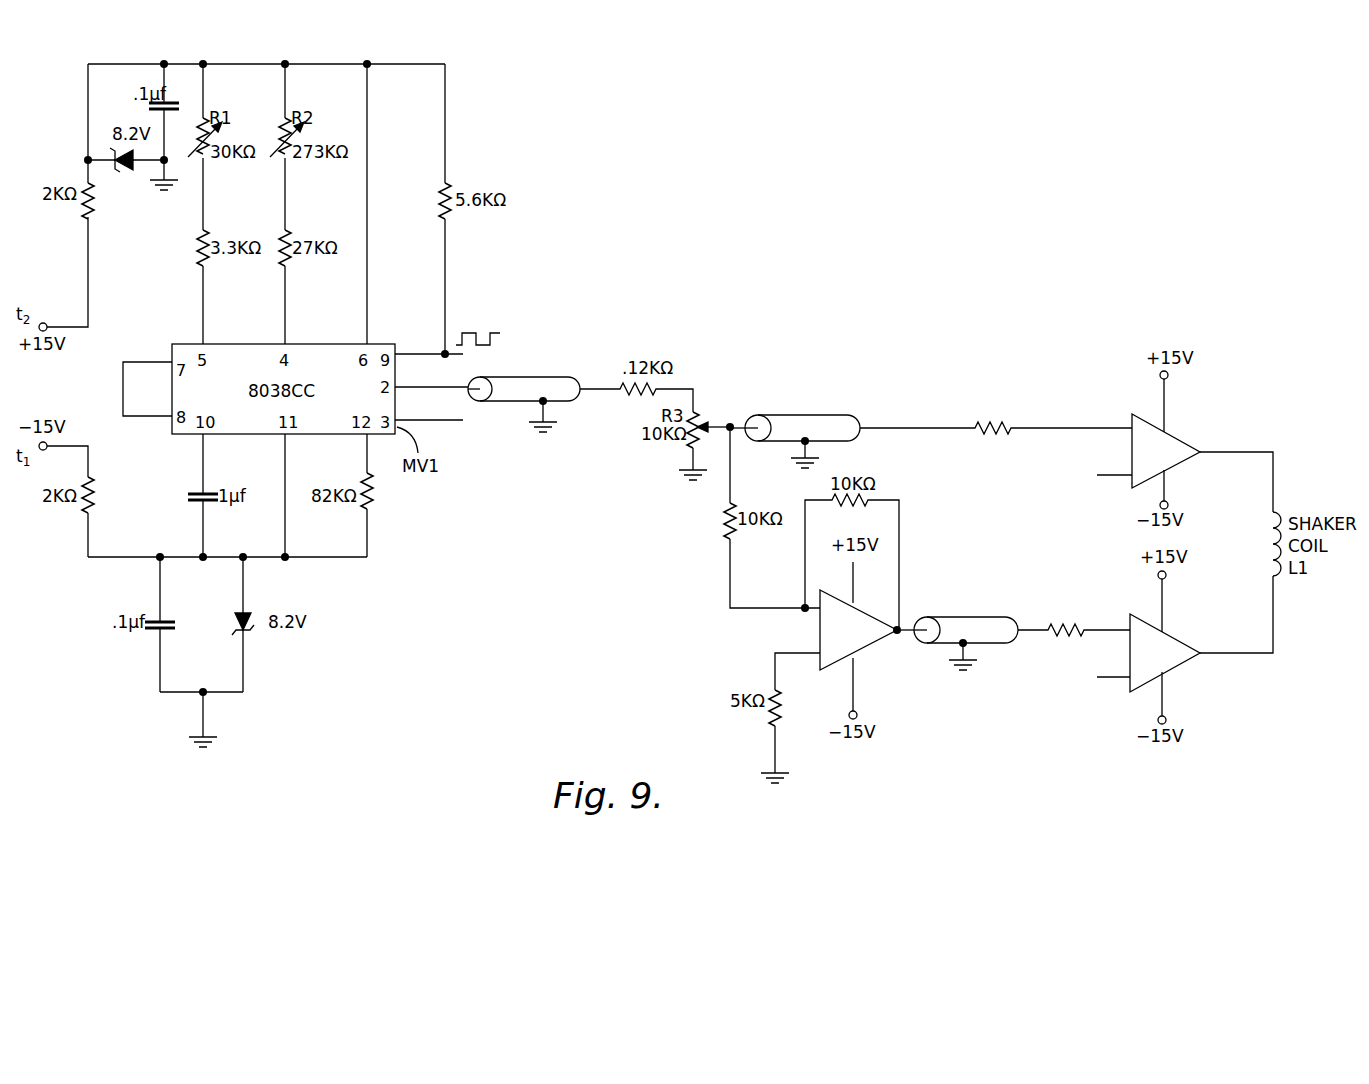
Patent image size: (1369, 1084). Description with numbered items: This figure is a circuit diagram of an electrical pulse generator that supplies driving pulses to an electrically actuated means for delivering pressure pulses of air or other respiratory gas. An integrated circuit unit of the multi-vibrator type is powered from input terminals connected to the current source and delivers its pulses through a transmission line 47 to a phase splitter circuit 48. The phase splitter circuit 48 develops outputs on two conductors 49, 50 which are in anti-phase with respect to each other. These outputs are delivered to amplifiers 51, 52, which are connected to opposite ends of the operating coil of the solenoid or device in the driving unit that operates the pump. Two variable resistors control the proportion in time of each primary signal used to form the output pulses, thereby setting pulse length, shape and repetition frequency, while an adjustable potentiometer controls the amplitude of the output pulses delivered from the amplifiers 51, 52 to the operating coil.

The transmission line 47 is at (583, 358).
The phase splitter circuit 48 is at (676, 675).
The conductor 49 is at (1090, 427).
The conductor 50 is at (1105, 630).
The amplifier 51 is at (1172, 432).
The amplifier 52 is at (1172, 640).